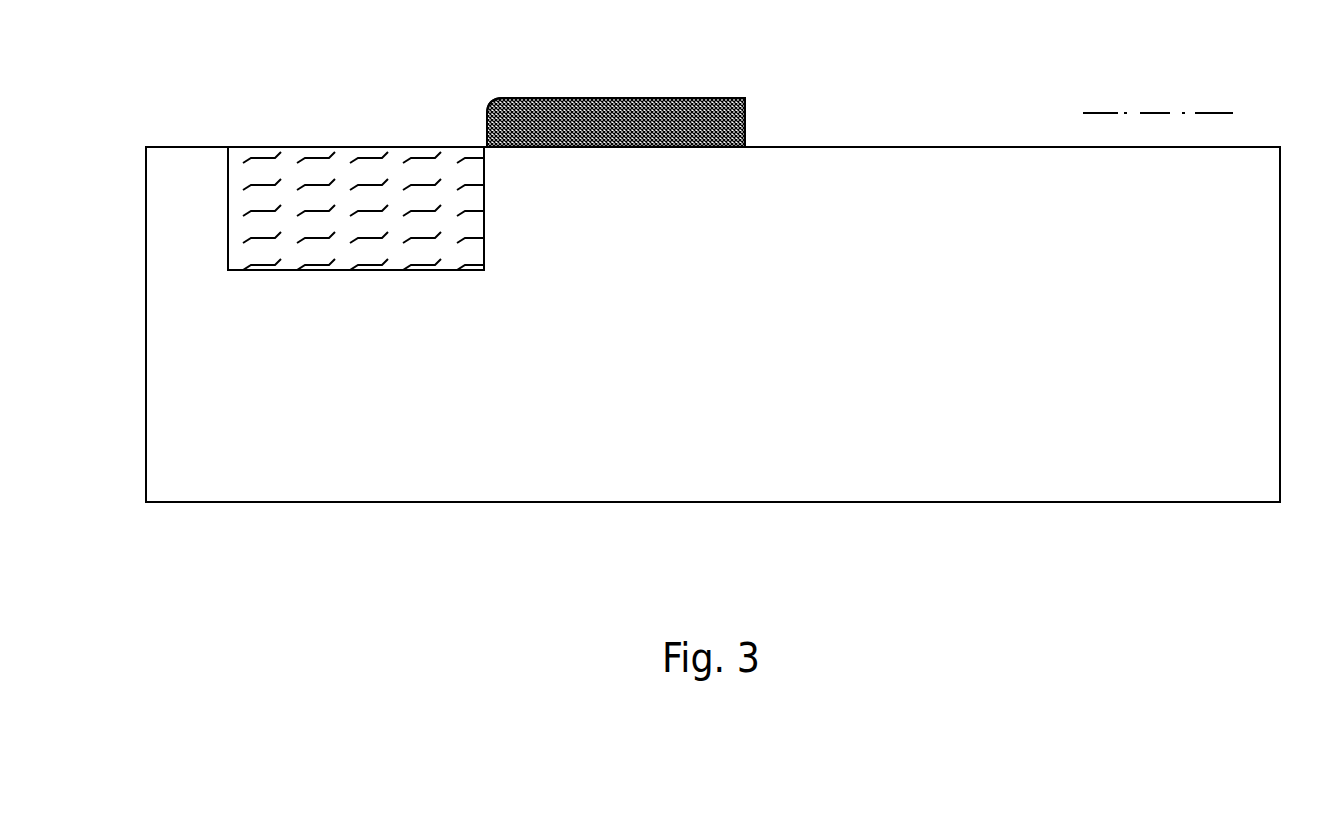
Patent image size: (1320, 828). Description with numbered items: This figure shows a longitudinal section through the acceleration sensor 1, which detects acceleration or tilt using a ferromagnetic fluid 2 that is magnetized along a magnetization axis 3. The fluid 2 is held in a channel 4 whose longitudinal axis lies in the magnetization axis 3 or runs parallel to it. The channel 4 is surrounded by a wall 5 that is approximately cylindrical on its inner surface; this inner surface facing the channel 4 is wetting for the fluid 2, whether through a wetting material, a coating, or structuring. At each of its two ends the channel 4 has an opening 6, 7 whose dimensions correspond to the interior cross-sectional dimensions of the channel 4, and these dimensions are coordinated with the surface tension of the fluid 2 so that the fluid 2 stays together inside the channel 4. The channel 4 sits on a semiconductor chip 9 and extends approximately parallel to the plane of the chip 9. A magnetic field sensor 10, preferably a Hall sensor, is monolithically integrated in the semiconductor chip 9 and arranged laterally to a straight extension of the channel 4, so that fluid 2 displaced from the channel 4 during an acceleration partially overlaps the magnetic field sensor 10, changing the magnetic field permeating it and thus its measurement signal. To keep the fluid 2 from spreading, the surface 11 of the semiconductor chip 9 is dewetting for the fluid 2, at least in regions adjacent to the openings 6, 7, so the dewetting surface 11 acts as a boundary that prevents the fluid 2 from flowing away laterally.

The acceleration sensor 1 is at (991, 630).
The ferromagnetic fluid 2 is at (745, 117).
The magnetization axis 3 is at (1150, 113).
The channel 4 is at (692, 81).
The wall 5 is at (488, 147).
The opening 6 is at (476, 107).
The opening 7 is at (756, 104).
The semiconductor chip 9 is at (1098, 478).
The magnetic field sensor 10 is at (295, 165).
The surface 11 is at (993, 140).